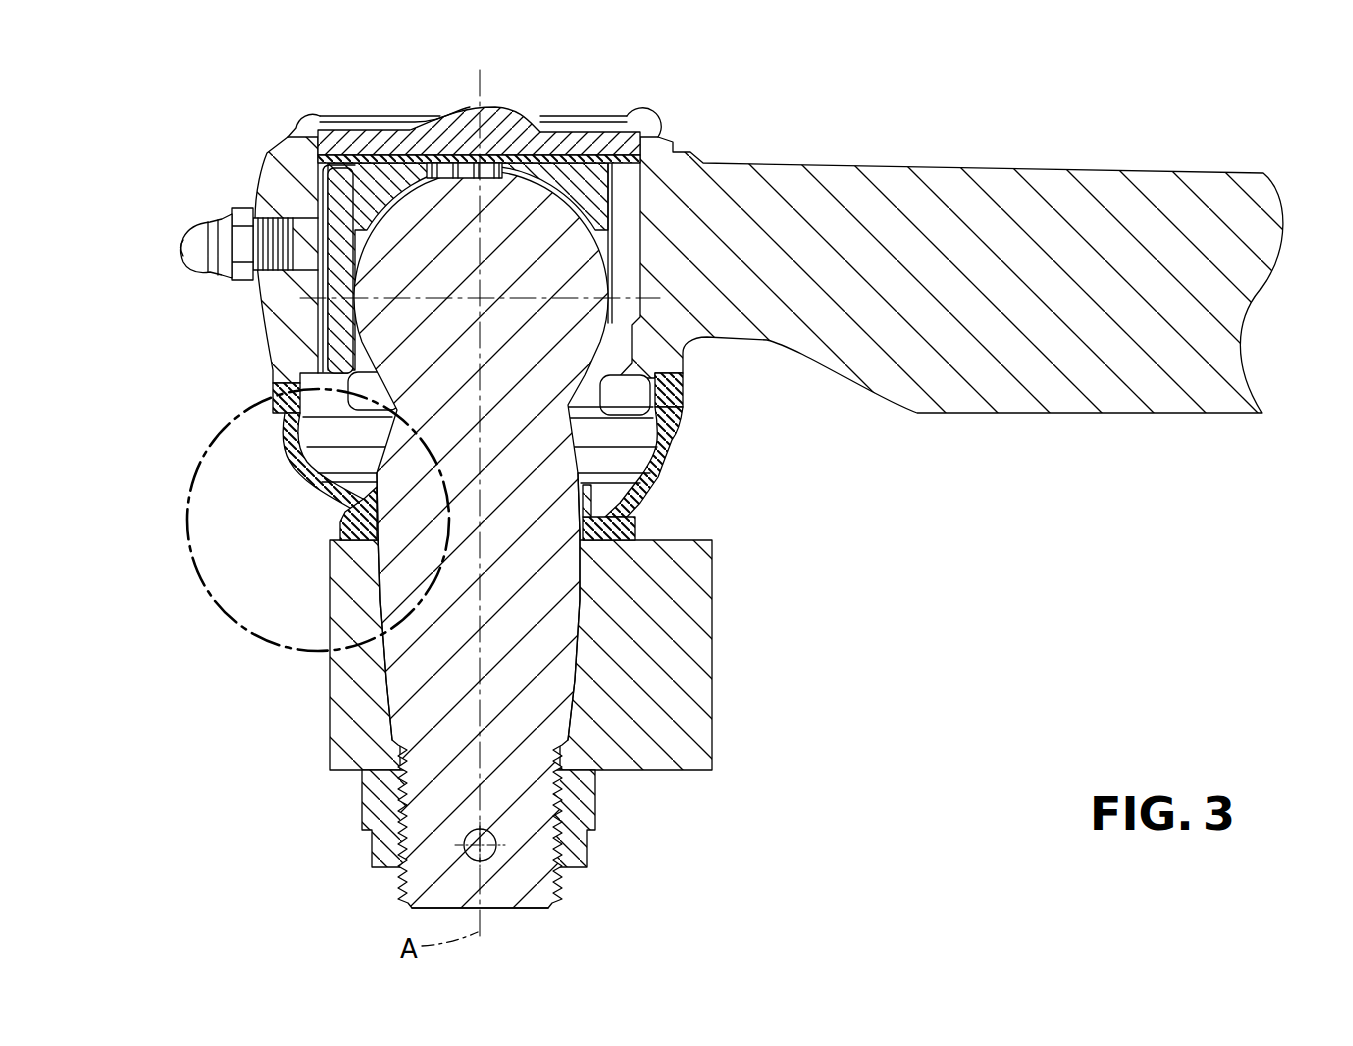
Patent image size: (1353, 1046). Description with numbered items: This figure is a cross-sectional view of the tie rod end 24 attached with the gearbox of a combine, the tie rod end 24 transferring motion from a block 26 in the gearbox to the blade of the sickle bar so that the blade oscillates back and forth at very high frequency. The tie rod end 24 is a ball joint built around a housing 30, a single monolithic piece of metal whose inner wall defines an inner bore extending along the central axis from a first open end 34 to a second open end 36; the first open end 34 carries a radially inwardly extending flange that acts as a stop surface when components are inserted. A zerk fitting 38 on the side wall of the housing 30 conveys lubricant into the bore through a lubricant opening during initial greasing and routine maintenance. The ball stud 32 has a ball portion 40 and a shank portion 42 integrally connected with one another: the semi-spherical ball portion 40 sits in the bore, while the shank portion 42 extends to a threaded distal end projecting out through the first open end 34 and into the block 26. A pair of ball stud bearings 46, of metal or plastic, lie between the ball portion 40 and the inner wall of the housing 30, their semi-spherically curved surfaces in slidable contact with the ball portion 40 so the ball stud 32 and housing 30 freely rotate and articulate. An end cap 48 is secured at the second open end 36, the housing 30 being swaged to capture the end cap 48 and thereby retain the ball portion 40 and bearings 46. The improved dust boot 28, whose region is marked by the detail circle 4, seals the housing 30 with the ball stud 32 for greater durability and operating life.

The tie rod end 24 is at (217, 124).
The block 26 is at (694, 648).
The dust boot 28 is at (684, 440).
The housing 30 is at (277, 333).
The ball stud 32 is at (530, 912).
The first open end 34 is at (325, 403).
The second open end 36 is at (328, 120).
The zerk fitting 38 is at (197, 230).
The ball portion 40 is at (523, 243).
The shank portion 42 is at (405, 678).
The ball stud bearings 46 is at (627, 240).
The end cap 48 is at (453, 125).
The detail circle 4 is at (186, 507).